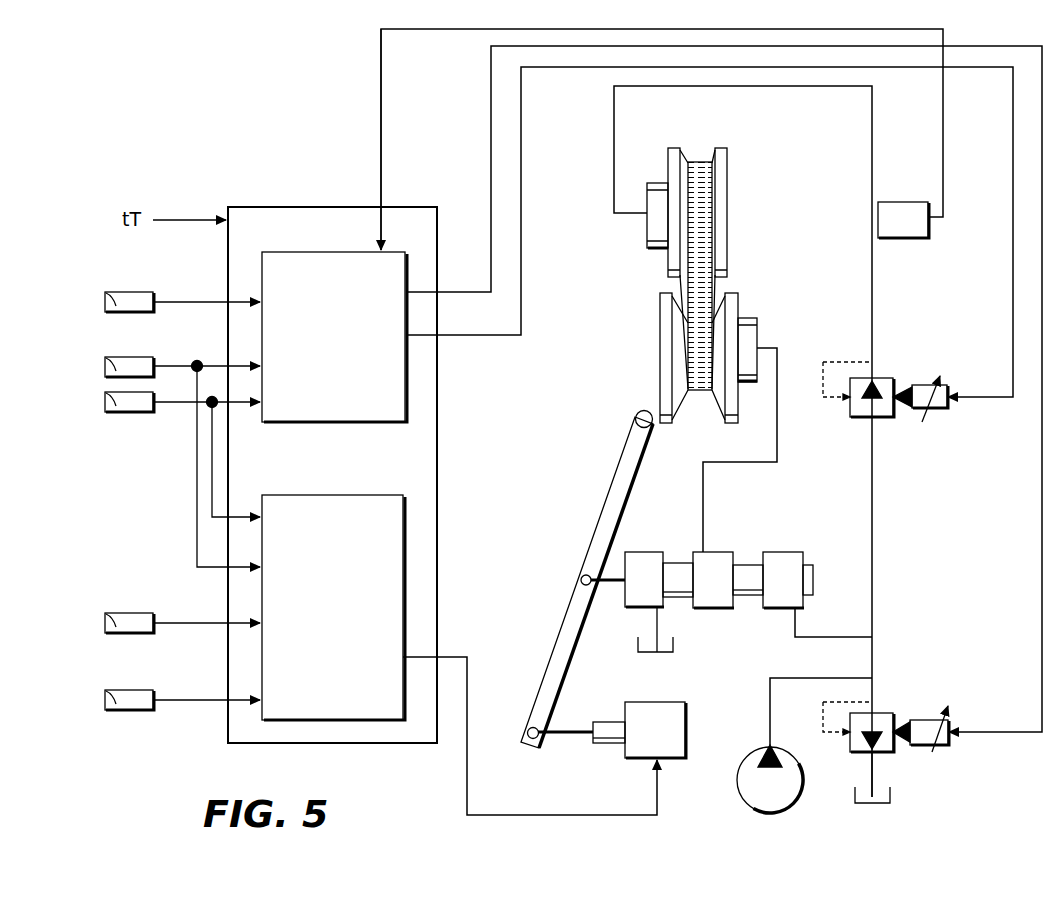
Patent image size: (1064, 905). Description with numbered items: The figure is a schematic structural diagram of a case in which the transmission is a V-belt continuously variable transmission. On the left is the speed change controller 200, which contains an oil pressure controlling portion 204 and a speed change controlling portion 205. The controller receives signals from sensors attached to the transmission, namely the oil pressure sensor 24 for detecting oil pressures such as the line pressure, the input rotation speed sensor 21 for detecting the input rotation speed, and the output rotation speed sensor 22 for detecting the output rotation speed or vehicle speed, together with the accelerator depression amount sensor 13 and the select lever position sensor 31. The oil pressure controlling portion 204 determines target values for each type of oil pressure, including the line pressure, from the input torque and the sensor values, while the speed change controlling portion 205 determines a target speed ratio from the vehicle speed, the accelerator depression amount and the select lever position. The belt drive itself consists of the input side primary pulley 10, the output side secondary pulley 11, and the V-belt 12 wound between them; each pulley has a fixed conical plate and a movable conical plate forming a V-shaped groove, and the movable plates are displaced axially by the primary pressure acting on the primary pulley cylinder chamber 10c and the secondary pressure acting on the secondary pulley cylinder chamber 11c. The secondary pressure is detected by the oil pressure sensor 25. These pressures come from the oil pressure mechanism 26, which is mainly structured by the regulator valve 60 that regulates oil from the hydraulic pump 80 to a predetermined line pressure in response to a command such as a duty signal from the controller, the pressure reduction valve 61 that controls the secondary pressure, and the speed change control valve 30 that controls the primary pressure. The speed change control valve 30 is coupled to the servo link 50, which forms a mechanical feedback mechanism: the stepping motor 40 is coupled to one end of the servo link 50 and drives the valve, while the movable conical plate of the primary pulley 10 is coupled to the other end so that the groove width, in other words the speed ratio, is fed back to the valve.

The speed change controller 200 is at (255, 210).
The oil pressure controlling portion 204 is at (338, 257).
The speed change controlling portion 205 is at (326, 506).
The oil pressure sensor 24 is at (105, 293).
The input rotation speed sensor 21 is at (105, 358).
The output rotation speed sensor 22 is at (105, 393).
The accelerator depression amount sensor 13 is at (105, 614).
The select lever position sensor 31 is at (105, 691).
The secondary pulley 11 is at (728, 222).
The secondary pulley cylinder chamber 11c is at (656, 229).
The V-belt 12 is at (707, 285).
The primary pulley 10 is at (659, 339).
The primary pulley cylinder chamber 10c is at (757, 323).
The oil pressure sensor 25 is at (903, 222).
The pressure reduction valve 61 is at (922, 385).
The regulator valve 60 is at (928, 720).
The servo link 50 is at (590, 529).
The speed change control valve 30 is at (738, 536).
The stepping motor 40 is at (668, 708).
The hydraulic pump 80 is at (781, 790).
The oil pressure mechanism 26 is at (953, 797).